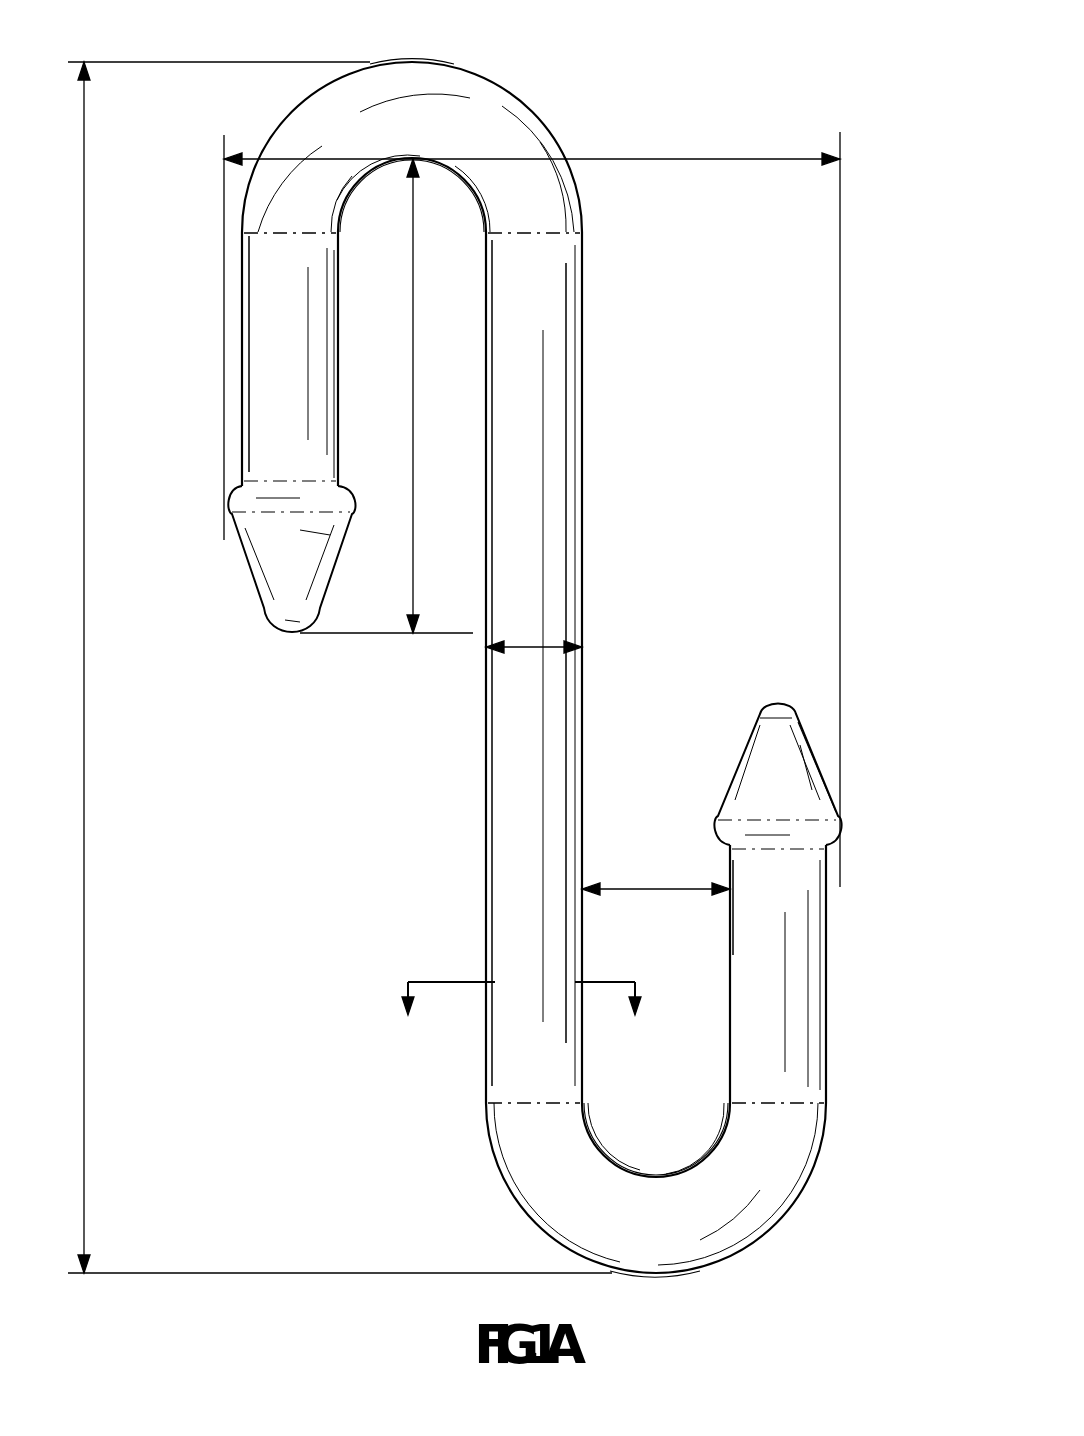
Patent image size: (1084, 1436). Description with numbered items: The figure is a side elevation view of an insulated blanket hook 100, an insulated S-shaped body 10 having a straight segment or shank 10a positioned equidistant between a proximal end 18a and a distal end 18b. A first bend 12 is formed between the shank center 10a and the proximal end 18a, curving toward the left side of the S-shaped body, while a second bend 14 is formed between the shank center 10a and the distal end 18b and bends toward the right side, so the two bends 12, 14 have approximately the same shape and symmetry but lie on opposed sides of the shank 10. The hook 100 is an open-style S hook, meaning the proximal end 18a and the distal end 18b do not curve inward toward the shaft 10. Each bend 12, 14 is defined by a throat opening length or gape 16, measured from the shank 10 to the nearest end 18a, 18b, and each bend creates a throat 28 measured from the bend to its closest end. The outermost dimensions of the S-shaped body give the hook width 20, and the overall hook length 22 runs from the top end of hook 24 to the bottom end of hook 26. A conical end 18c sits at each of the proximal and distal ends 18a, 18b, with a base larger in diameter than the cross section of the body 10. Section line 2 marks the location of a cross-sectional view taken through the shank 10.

The tubing assembly 100 is at (502, 681).
The tube 10 is at (582, 727).
The tube diameter 10a is at (532, 645).
The first bend 12 is at (434, 214).
The second bend 14 is at (652, 1165).
The gap between legs 16 is at (640, 889).
The first end fitting 18a is at (290, 633).
The second end fitting 18b is at (776, 702).
The tapered surface of end fitting 18c is at (830, 782).
The overall width 20 is at (706, 159).
The overall height 22 is at (84, 400).
The upper apex 24 is at (413, 62).
The lower apex 26 is at (655, 1273).
The leg length 28 is at (416, 430).
The section line 2- 2 is at (520, 1019).